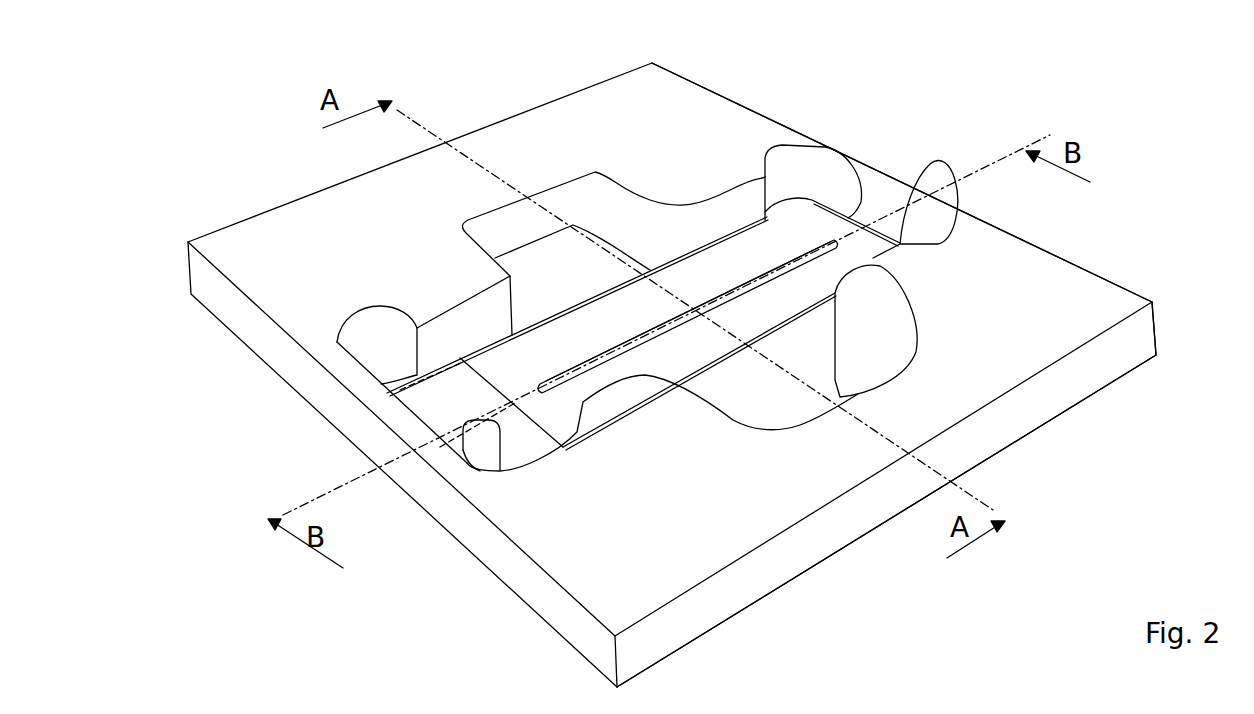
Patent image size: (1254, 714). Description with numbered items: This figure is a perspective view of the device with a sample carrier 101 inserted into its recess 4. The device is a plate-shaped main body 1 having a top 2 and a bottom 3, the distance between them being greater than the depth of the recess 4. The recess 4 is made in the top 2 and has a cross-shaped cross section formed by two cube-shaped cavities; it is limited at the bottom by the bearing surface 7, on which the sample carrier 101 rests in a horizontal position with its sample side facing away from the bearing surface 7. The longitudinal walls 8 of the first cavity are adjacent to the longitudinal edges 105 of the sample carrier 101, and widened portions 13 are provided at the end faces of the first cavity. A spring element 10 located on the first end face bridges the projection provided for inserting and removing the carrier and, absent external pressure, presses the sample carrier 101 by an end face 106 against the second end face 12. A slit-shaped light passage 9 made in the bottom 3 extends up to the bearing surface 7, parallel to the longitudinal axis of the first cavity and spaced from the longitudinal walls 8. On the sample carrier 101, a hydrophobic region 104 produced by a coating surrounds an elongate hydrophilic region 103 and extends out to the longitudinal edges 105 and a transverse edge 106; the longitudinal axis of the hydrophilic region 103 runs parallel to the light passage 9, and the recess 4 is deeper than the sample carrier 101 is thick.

The main body 1 is at (632, 88).
The top 2 is at (1022, 326).
The bottom 3 is at (767, 597).
The recess 4 is at (805, 413).
The bearing surface 7 is at (546, 305).
The longitudinal walls 8 is at (472, 325).
The light passage 9 is at (512, 410).
The spring element 10 is at (468, 453).
The second end face 12 is at (907, 212).
The widened portions 13 is at (378, 340).
The sample carrier 101 is at (683, 348).
The hydrophilic region 103 is at (650, 335).
The hydrophobic region 104 is at (790, 334).
The longitudinal edges 105 is at (823, 313).
The transverse edge 106 is at (867, 200).